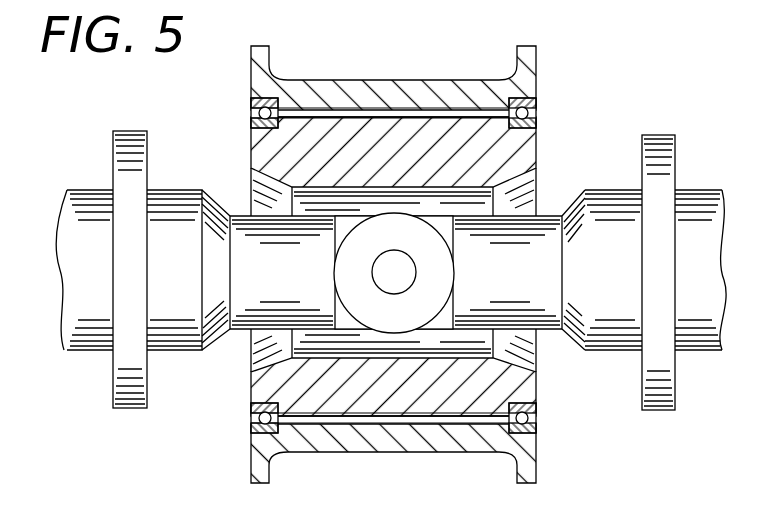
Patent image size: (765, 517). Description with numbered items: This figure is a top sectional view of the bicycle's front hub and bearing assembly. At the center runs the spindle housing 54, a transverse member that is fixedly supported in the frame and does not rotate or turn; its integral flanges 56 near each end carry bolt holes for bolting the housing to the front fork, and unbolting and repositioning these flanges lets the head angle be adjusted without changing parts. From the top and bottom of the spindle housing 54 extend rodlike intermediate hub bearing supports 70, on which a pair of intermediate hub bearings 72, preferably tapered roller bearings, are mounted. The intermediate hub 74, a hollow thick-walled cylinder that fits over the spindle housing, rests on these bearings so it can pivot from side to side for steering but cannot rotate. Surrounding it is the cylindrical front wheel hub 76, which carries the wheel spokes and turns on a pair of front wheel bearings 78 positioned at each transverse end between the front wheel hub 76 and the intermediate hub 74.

The spindle housing 54 is at (181, 351).
The integral flanges 56 is at (113, 389).
The intermediate hub bearing support 70 is at (387, 295).
The intermediate hub bearings 72 is at (440, 321).
The intermediate hub 74 is at (538, 386).
The front wheel hub 76 is at (334, 80).
The front wheel bearings 78 is at (251, 114).